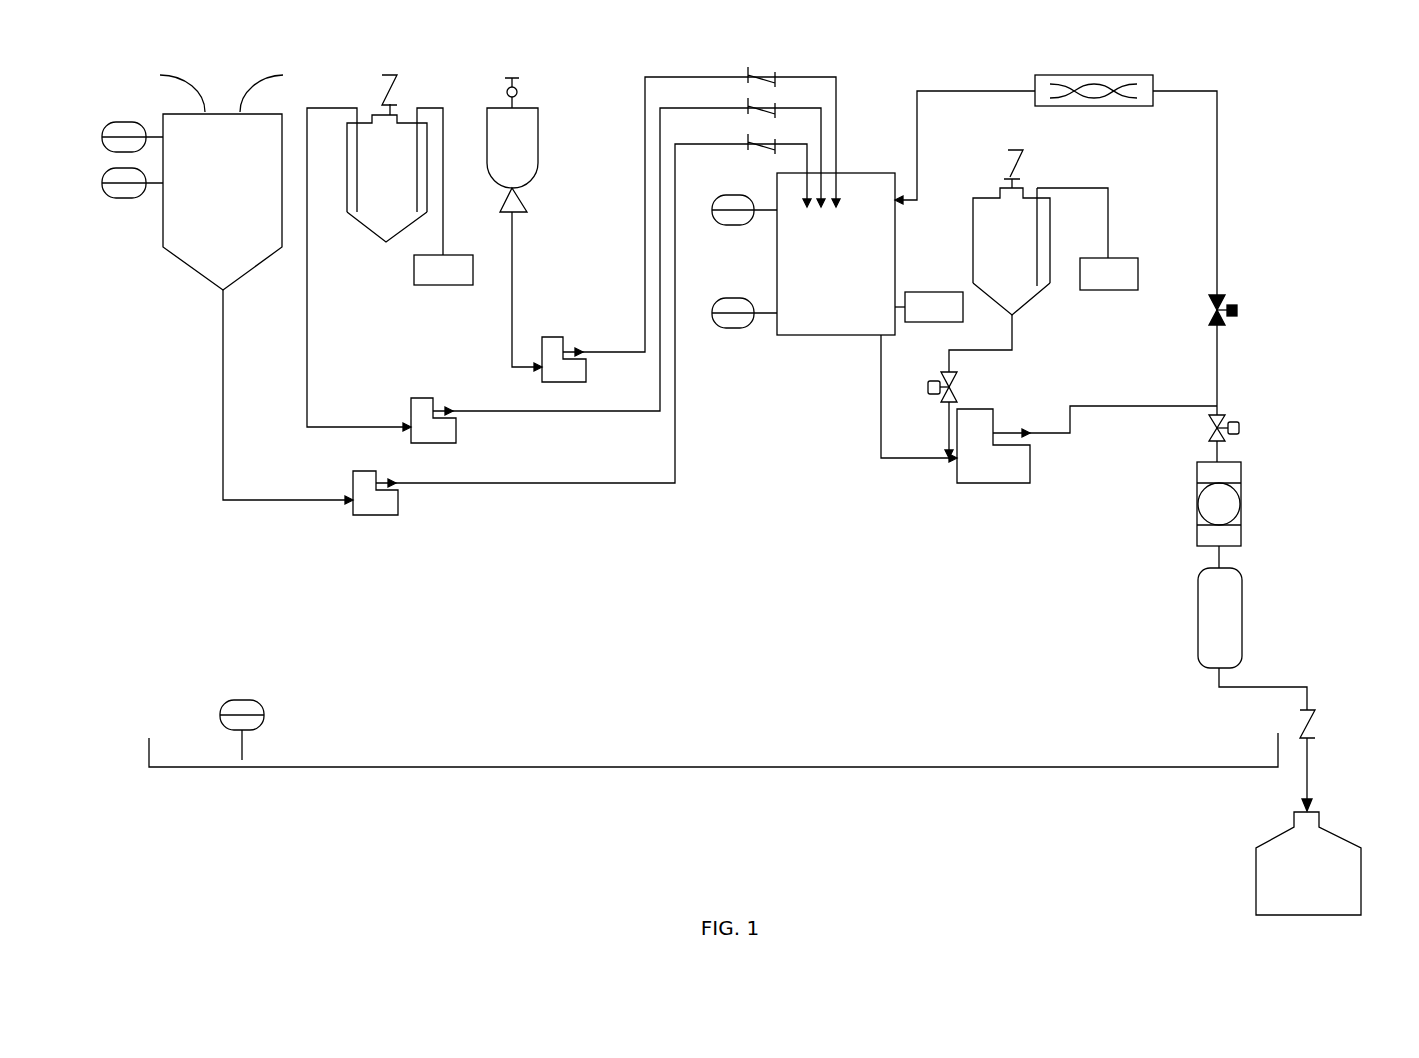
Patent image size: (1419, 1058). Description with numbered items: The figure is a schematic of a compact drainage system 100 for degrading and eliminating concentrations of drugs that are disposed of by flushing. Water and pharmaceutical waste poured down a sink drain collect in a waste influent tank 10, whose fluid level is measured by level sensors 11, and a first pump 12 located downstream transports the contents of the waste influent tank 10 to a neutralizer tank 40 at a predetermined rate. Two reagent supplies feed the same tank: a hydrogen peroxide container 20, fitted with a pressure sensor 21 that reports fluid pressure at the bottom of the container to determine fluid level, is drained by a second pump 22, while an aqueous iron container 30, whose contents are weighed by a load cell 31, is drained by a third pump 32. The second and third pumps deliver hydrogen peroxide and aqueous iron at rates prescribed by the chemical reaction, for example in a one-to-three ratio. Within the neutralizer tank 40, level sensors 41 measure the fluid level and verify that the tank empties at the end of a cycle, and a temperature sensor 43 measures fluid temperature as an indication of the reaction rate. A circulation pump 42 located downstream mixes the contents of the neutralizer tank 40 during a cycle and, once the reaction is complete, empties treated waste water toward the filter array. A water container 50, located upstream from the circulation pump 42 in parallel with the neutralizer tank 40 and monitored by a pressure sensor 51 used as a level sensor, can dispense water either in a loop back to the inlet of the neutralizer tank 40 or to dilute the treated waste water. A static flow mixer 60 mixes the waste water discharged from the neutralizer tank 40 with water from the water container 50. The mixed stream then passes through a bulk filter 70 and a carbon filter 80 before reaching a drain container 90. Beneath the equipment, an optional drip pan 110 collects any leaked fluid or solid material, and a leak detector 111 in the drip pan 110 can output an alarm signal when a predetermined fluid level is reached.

The compact drainage system 100 is at (1288, 122).
The waste influent tank 10 is at (221, 182).
The level sensor 11 is at (108, 122).
The first pump 12 is at (375, 494).
The hydrogen peroxide container 20 is at (387, 158).
The pressure sensor 21 is at (443, 270).
The second pump 22 is at (433, 421).
The aqueous iron container 30 is at (512, 160).
The load cell 31 is at (522, 88).
The third pump 32 is at (564, 360).
The neutralizer tank 40 is at (836, 254).
The level sensor 41 is at (733, 227).
The circulation pump 42 is at (993, 446).
The temperature sensor 43 is at (929, 307).
The water container 50 is at (1011, 232).
The pressure sensor 51 is at (1109, 274).
The static flow mixer 60 is at (1083, 73).
The bulk filter 70 is at (1242, 498).
The carbon filter 80 is at (1242, 625).
The drain container 90 is at (1338, 833).
The drip pan 110 is at (635, 767).
The leak detector 111 is at (243, 698).